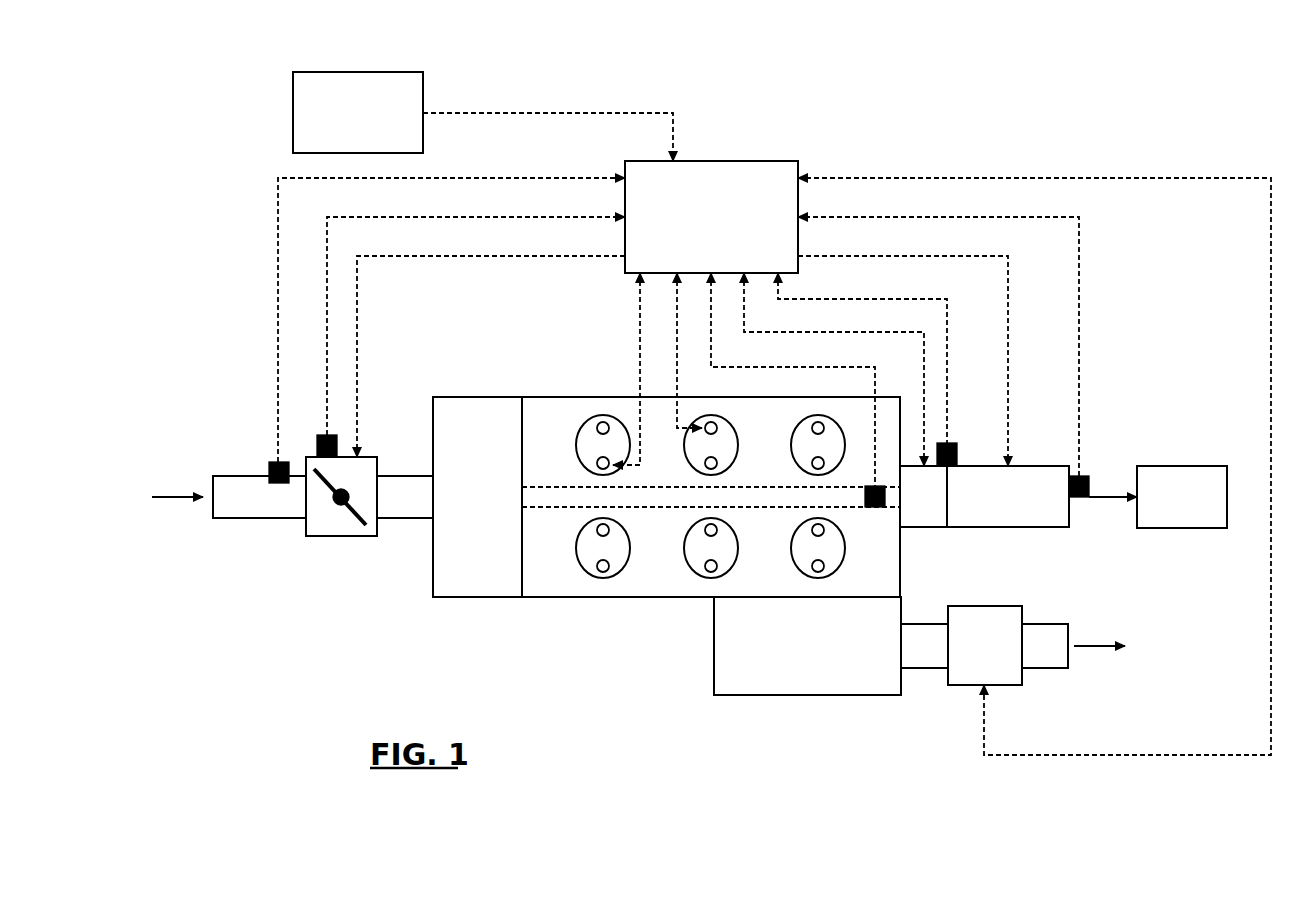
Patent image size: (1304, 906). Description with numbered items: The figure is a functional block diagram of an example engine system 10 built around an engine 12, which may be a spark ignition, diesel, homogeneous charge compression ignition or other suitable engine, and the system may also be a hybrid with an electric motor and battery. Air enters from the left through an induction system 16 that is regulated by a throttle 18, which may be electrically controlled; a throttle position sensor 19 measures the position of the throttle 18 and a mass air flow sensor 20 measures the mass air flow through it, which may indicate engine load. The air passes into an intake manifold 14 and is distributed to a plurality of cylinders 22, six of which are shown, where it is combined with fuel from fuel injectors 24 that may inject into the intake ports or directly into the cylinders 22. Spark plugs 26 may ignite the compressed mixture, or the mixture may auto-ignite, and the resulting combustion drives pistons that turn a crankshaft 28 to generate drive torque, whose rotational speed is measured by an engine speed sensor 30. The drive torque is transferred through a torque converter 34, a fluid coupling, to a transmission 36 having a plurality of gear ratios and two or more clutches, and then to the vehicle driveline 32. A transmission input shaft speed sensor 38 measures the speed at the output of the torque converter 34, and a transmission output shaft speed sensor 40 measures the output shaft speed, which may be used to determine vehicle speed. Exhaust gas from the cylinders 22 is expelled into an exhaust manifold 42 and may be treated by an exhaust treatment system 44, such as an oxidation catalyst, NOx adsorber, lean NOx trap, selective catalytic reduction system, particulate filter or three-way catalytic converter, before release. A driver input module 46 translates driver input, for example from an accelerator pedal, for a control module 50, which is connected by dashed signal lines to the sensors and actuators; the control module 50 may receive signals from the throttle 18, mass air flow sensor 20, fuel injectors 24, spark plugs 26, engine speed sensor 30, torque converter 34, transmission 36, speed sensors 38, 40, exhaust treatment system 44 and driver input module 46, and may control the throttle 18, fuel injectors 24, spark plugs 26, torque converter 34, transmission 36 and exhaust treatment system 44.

The engine system 10 is at (1084, 88).
The engine 12 is at (562, 598).
The intake manifold 14 is at (477, 598).
The induction system 16 is at (236, 476).
The throttle 18 is at (340, 536).
The throttle position sensor 19 is at (322, 435).
The mass air flow sensor 20 is at (279, 483).
The cylinders 22 is at (618, 568).
The fuel injectors 24 is at (598, 531).
The spark plugs 26 is at (813, 571).
The crankshaft 28 is at (711, 498).
The engine speed sensor 30 is at (877, 507).
The driveline 32 is at (1182, 466).
The torque converter 34 is at (925, 527).
The transmission 36 is at (1008, 527).
The transmission input shaft speed sensor 38 is at (950, 443).
The transmission output shaft speed sensor 40 is at (1079, 497).
The exhaust manifold 42 is at (808, 695).
The exhaust treatment system 44 is at (960, 685).
The driver input module 46 is at (357, 72).
The control module 50 is at (748, 161).